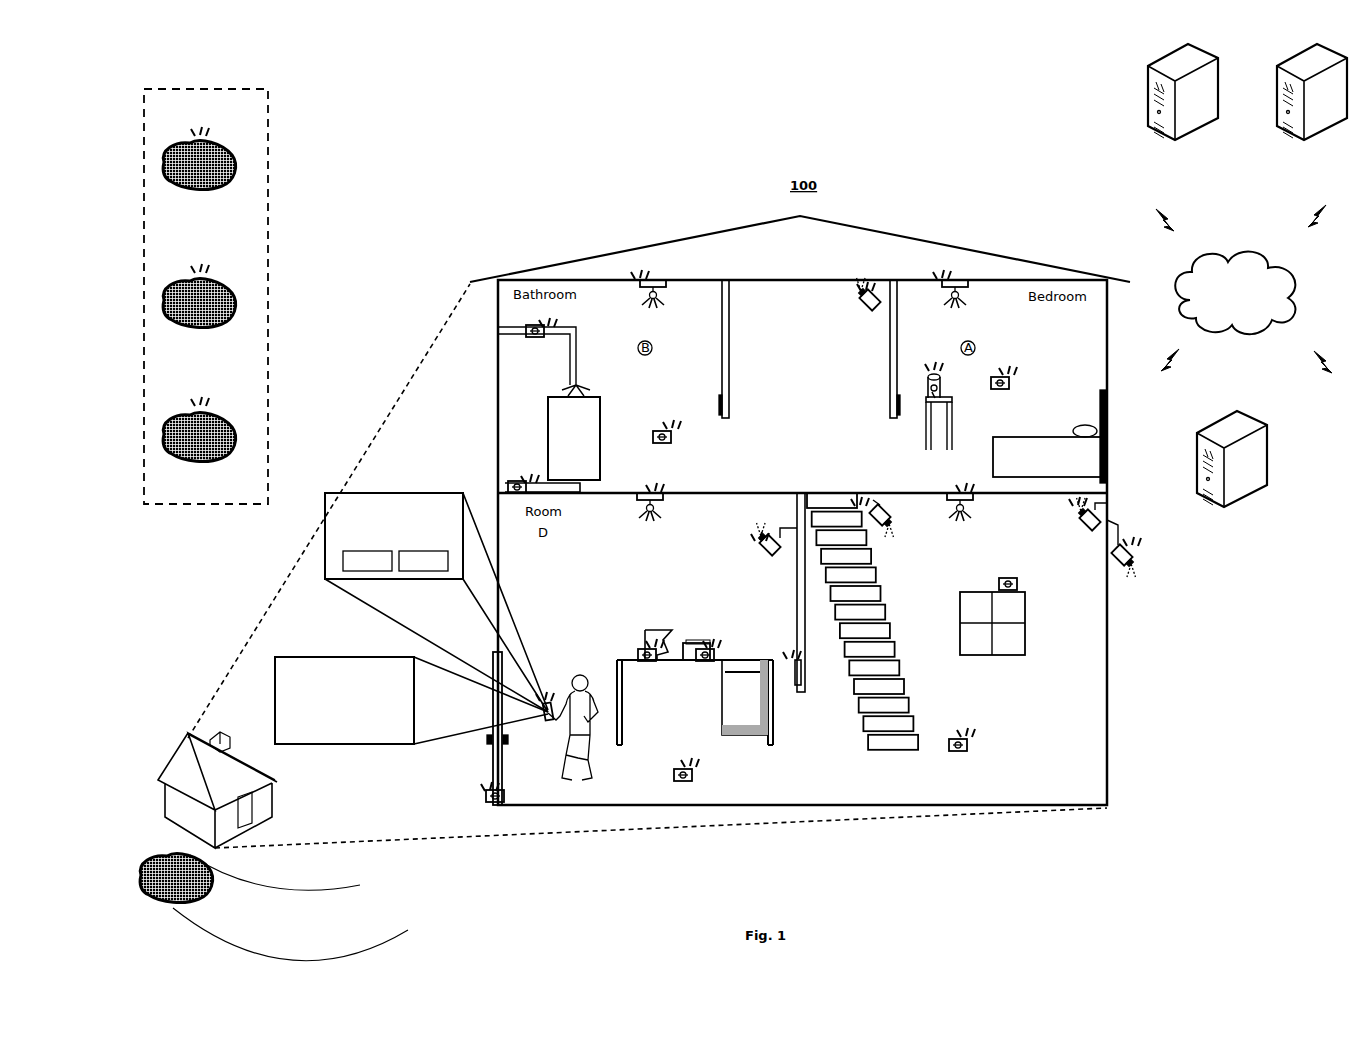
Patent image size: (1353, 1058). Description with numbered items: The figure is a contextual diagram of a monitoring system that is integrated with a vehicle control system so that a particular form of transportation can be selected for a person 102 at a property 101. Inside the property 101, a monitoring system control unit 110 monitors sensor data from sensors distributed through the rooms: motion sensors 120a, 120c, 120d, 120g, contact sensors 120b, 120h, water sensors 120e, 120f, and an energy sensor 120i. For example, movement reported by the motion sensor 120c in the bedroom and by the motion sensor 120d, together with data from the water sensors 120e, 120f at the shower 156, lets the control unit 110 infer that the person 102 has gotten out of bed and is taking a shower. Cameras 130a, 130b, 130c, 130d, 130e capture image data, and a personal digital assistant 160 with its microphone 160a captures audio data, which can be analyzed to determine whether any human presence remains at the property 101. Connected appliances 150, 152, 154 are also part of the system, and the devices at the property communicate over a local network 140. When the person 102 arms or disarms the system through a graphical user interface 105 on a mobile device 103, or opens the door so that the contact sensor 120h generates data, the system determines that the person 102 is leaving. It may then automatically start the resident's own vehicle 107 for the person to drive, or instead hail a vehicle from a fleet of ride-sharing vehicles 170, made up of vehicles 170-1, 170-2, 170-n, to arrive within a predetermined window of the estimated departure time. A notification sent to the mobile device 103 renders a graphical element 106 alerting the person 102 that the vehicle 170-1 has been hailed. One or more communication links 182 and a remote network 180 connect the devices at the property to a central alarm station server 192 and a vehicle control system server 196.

The property 101 is at (842, 228).
The person 102 is at (585, 772).
The mobile device 103 is at (548, 722).
The graphical user interface 105 is at (408, 496).
The graphical element 106 is at (343, 660).
The property resident's vehicle 107 is at (155, 886).
The monitoring system control unit 110 is at (795, 684).
The motion sensor 120a is at (968, 748).
The contact sensor 120b is at (1018, 586).
The motion sensor 120c is at (1010, 385).
The motion sensor 120d is at (672, 439).
The water sensor 120e is at (532, 338).
The water sensor 120f is at (508, 484).
The motion sensor 120g is at (674, 777).
The contact sensor 120h is at (652, 661).
The energy sensor 120i is at (708, 661).
The camera 130a is at (878, 528).
The camera 130b is at (1100, 515).
The camera 130c is at (1112, 562).
The camera 130d is at (878, 308).
The camera 130e is at (778, 552).
The local network 140 is at (645, 270).
The connected appliance 150 is at (648, 632).
The connected appliance 152 is at (690, 642).
The connected appliance 154 is at (735, 732).
The shower 156 is at (596, 426).
The personal digital assistant 160 is at (940, 383).
The microphone 160a is at (930, 393).
The fleet of ride-sharing vehicles 170 is at (313, 191).
The ride-sharing vehicle 170-1 is at (188, 185).
The ride-sharing vehicle 170-2 is at (185, 320).
The ride-sharing vehicle 170-n is at (185, 452).
The remote network 180 is at (1184, 288).
The communication link 182 is at (205, 130).
The central alarm station server 192 is at (1158, 92).
The vehicle control system server 196 is at (1240, 496).